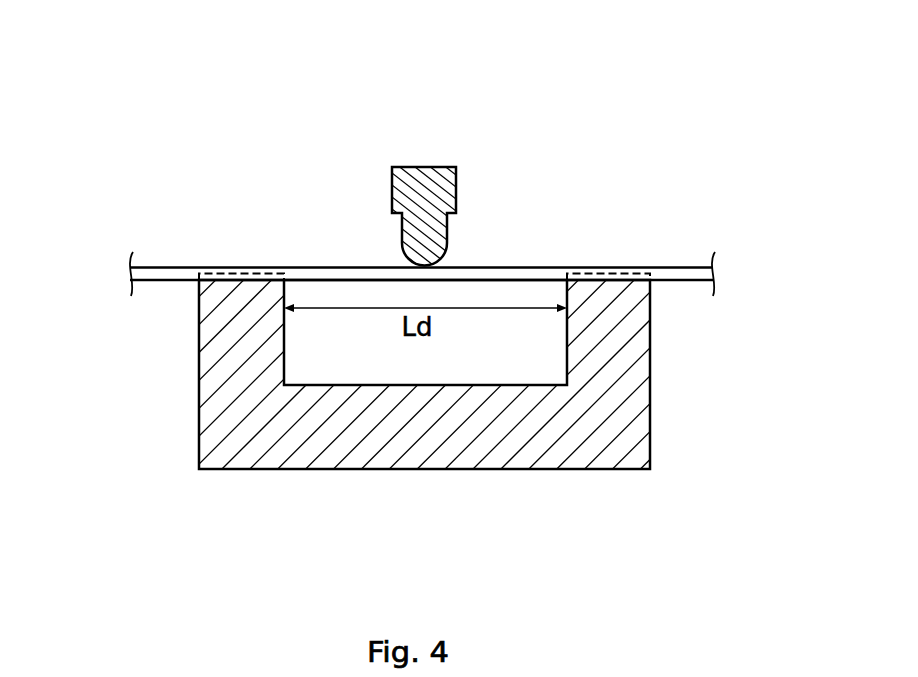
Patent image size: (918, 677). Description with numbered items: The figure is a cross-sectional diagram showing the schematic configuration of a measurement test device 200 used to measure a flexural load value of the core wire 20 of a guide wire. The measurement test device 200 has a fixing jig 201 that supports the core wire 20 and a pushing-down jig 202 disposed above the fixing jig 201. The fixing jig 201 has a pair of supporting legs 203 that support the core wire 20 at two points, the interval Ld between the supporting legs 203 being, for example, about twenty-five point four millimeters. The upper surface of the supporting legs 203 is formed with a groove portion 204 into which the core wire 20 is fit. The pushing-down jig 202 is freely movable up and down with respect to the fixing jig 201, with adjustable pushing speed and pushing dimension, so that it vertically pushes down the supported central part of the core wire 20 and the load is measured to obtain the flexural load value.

The measurement test device 200 is at (117, 61).
The fixing jig 201 is at (425, 469).
The pushing-down jig 202 is at (422, 180).
The supporting legs 203 is at (215, 351).
The groove portion 204 is at (233, 273).
The core wire 20 is at (320, 275).